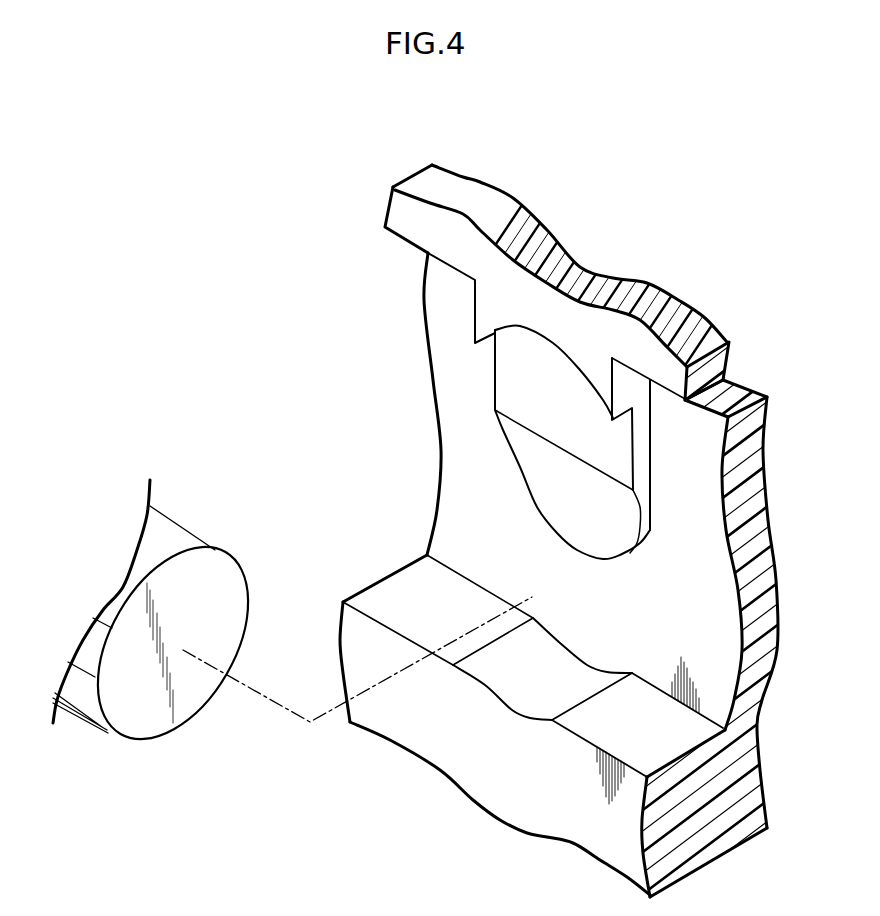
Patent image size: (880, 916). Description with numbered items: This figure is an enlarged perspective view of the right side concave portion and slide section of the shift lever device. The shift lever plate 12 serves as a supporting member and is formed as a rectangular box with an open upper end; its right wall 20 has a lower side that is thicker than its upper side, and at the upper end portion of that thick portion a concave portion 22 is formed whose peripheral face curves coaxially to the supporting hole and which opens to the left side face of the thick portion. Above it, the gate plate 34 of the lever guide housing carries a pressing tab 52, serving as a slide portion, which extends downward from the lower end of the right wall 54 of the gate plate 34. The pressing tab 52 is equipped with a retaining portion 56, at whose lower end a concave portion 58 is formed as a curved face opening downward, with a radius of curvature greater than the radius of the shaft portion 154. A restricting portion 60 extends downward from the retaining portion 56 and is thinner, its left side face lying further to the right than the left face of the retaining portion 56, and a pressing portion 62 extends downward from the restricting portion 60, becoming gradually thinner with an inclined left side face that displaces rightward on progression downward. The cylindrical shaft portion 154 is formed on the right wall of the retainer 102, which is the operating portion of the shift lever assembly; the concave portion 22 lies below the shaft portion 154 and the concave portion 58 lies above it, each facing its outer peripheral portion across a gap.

The shift lever plate 12 is at (591, 538).
The right wall 20 is at (507, 818).
The concave portion 22 is at (518, 697).
The gate plate 34 is at (591, 280).
The pressing tab 52 is at (567, 452).
The right wall 54 is at (398, 220).
The retaining portion 56 is at (485, 313).
The concave portion 58 is at (548, 350).
The restricting portion 60 is at (506, 375).
The pressing portion 62 is at (555, 513).
The shaft portion 154 is at (166, 632).
The retainer 102 is at (147, 733).